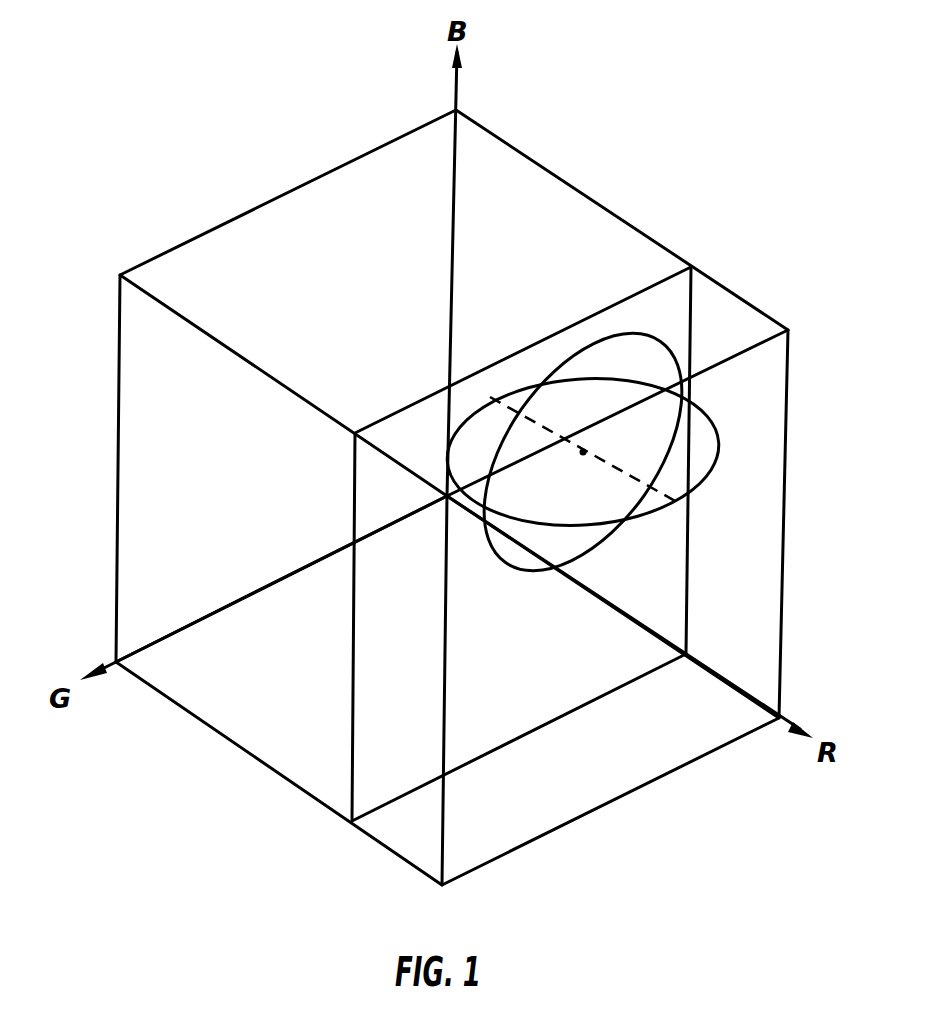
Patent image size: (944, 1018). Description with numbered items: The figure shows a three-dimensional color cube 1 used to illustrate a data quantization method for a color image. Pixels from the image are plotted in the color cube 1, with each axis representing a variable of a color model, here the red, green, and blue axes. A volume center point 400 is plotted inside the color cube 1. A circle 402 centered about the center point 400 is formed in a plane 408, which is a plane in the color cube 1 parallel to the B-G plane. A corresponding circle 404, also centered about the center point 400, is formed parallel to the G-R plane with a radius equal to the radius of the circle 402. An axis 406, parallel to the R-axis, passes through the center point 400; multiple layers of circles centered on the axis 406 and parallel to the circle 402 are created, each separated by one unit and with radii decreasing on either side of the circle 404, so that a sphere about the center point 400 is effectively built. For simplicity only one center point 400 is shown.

The color cube 1 is at (588, 212).
The volume center point 400 is at (583, 454).
The circle 402 is at (592, 342).
The corresponding circle 404 is at (702, 488).
The axis 406 is at (663, 500).
The plane 408 is at (350, 755).